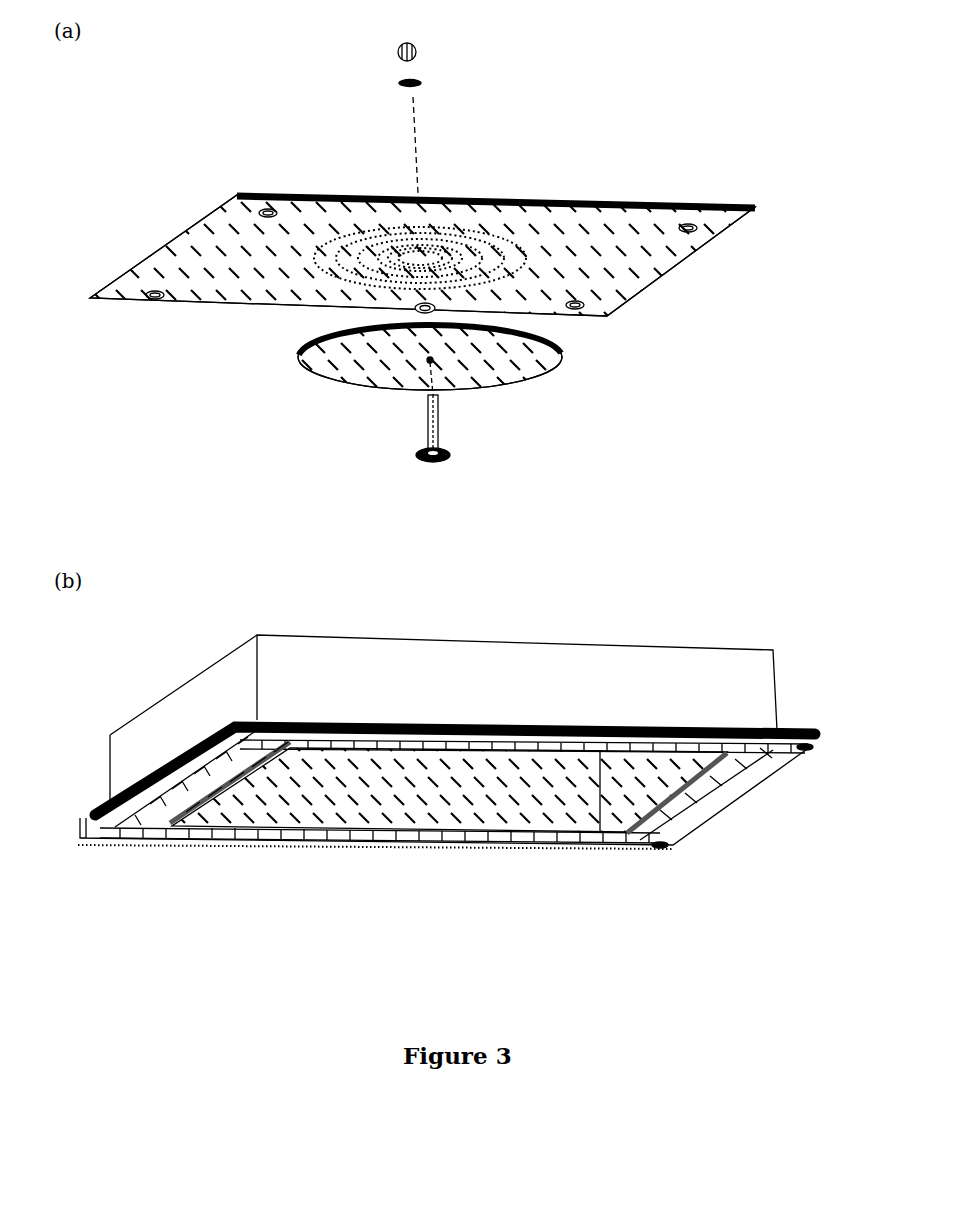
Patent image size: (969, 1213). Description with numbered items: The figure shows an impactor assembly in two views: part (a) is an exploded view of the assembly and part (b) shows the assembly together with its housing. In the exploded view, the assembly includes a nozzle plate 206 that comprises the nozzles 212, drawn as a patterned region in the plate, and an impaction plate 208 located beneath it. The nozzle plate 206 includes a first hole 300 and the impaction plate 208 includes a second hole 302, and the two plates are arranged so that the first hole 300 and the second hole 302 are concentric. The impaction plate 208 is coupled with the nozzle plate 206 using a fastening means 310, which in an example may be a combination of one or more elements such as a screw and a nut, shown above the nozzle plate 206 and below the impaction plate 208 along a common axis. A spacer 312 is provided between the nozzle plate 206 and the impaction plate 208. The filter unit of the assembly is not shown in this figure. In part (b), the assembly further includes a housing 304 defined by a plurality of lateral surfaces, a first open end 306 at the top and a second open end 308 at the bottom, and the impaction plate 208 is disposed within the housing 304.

The nozzle plate 206 is at (665, 220).
The nozzles 212 is at (470, 240).
The first hole 300 is at (420, 257).
The second hole 302 is at (433, 362).
The housing 304 is at (86, 650).
The first open end 306 is at (560, 616).
The second open end 308 is at (462, 878).
The fastening means 310 is at (418, 47).
The spacer 312 is at (415, 309).
The impaction plate 208 is at (562, 347).